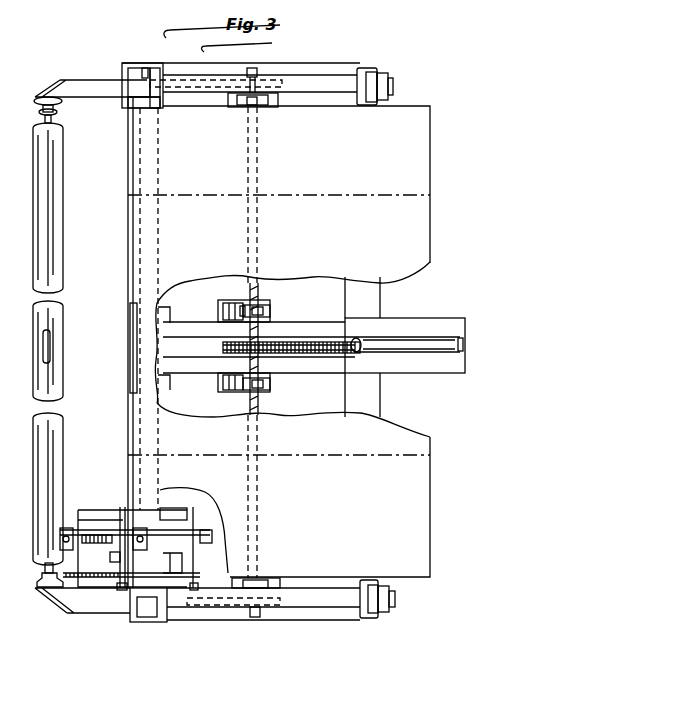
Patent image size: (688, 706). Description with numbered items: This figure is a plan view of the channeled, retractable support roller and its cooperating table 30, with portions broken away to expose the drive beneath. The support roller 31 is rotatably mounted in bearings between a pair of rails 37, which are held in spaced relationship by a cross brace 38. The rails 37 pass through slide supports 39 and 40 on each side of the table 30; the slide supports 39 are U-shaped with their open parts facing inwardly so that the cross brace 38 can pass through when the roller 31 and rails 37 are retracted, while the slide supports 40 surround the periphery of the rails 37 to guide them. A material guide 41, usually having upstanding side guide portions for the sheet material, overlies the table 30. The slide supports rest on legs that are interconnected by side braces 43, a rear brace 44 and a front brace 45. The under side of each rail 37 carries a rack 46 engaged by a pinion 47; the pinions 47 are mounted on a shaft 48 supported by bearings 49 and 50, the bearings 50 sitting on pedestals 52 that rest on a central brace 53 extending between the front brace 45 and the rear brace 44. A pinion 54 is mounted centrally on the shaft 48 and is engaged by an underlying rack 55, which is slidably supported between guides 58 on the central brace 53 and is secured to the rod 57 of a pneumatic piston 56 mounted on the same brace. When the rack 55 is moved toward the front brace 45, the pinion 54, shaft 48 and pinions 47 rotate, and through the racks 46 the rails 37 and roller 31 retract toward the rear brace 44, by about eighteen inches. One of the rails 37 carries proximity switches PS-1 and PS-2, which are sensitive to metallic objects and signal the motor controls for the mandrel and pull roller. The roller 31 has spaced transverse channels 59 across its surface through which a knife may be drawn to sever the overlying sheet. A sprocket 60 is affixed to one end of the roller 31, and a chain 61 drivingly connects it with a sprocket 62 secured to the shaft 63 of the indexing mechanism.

The table 30 is at (224, 628).
The support roller 31 is at (42, 370).
The rails 37 is at (78, 80).
The cross brace 38 is at (147, 102).
The slide supports 39 is at (148, 70).
The slide supports 40 is at (370, 68).
The material guide 41 is at (420, 138).
The side braces 43 is at (330, 63).
The rear brace 44 is at (375, 295).
The front brace 45 is at (132, 218).
The rack 46 is at (240, 607).
The pinion 47 is at (270, 607).
The shaft 48 is at (262, 400).
The bearings 49 is at (255, 105).
The bearings 50 is at (270, 308).
The pedestals 52 is at (272, 310).
The central brace 53 is at (222, 313).
The pinion 54 is at (222, 347).
The rack 55 is at (330, 347).
The pneumatic piston 56 is at (462, 343).
The rod 57 is at (355, 355).
The guides 58 is at (307, 363).
The transverse channels 59 is at (47, 492).
The sprocket 60 is at (43, 578).
The chain 61 is at (72, 583).
The sprocket 62 is at (115, 580).
The shaft 63 is at (115, 557).
The proximity switch PS-1 is at (137, 530).
The proximity switch PS-2 is at (68, 528).